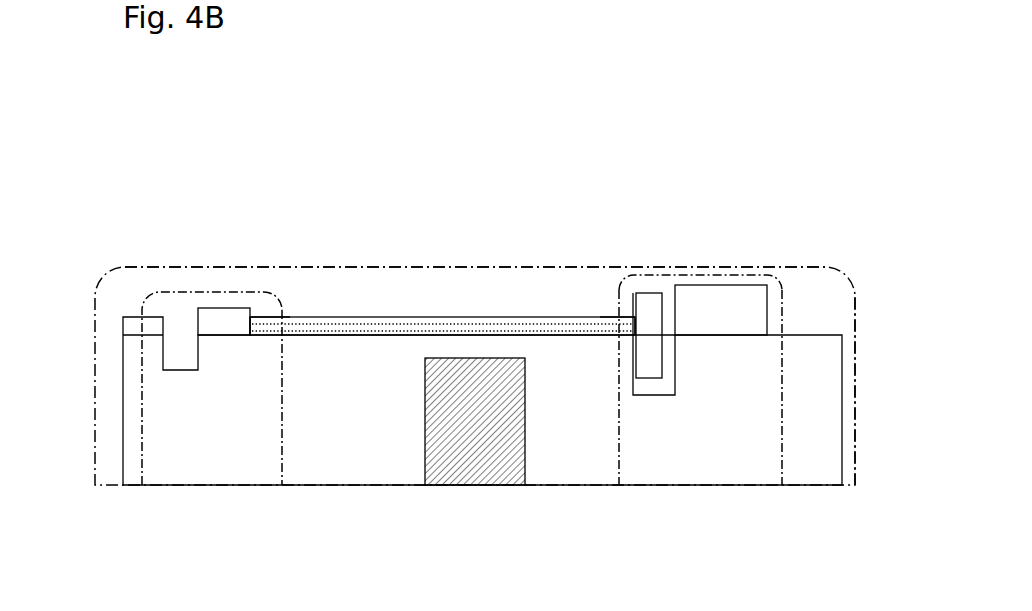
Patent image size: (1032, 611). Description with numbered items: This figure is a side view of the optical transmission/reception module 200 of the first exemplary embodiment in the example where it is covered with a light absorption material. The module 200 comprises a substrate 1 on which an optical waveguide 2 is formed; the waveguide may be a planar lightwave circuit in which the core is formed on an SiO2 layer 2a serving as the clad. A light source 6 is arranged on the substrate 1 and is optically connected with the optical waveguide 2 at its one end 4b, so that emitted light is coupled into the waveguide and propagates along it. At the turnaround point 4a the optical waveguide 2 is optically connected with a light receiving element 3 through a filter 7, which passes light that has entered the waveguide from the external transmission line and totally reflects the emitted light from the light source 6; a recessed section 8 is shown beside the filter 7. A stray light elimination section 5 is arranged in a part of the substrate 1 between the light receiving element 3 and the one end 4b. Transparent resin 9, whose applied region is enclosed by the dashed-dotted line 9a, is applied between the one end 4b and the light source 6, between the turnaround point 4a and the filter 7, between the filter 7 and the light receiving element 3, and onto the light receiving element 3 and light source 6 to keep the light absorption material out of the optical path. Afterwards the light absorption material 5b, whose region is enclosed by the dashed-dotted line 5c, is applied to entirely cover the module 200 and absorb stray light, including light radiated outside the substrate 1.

The substrate 1 is at (657, 487).
The optical waveguide 2 is at (542, 320).
The SiO2 layer 2a is at (447, 318).
The light receiving element 3 is at (722, 285).
The turnaround point 4a is at (623, 307).
The one end 4b is at (252, 313).
The stray light elimination section 5 is at (470, 432).
The light absorption material 5b is at (815, 290).
The dashed-dotted line 5c is at (853, 463).
The light source 6 is at (223, 308).
The filter 7 is at (647, 292).
The recessed section 8 is at (658, 397).
The transparent resin 9 is at (268, 302).
The dashed-dotted line 9a is at (283, 440).
The optical transmission/reception module 200 is at (687, 132).